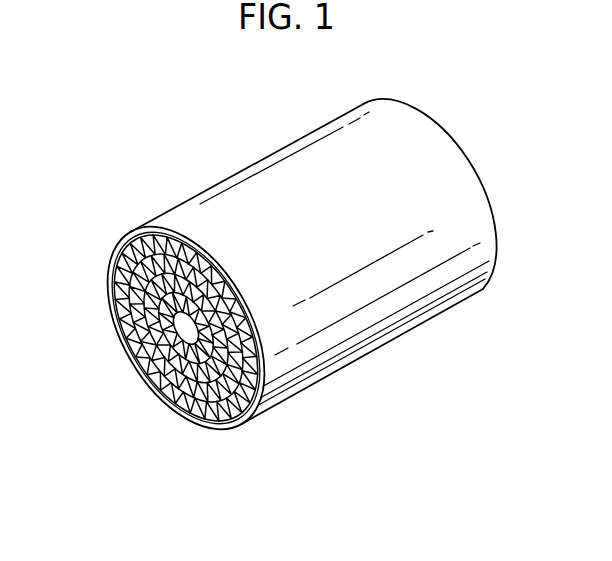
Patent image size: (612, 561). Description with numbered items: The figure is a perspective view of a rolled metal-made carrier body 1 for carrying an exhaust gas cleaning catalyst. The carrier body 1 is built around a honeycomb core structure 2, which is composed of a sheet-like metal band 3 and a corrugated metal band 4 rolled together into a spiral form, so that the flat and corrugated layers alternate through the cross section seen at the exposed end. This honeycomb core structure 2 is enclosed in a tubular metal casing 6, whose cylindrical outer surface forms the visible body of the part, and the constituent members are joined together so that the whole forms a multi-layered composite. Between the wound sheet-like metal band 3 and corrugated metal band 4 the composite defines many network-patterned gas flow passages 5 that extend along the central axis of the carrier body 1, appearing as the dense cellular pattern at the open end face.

The metal-made carrier body 1 is at (465, 145).
The honeycomb core structure 2 is at (118, 312).
The sheet-like metal band 3 is at (143, 362).
The corrugated metal band 4 is at (175, 408).
The network-patterned gas flow passages 5 is at (195, 418).
The tubular metal casing 6 is at (392, 305).